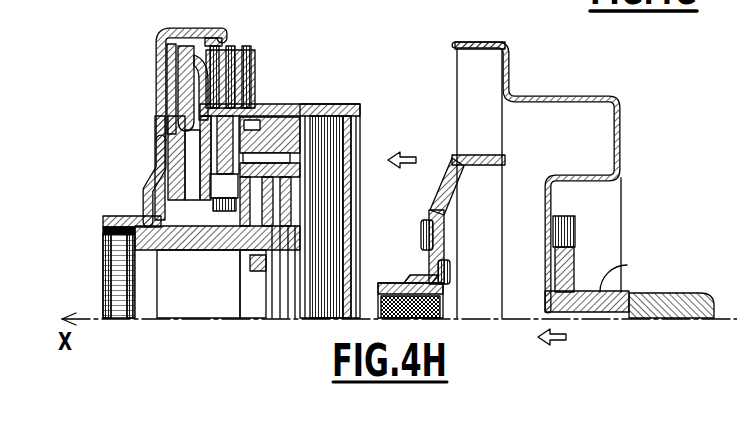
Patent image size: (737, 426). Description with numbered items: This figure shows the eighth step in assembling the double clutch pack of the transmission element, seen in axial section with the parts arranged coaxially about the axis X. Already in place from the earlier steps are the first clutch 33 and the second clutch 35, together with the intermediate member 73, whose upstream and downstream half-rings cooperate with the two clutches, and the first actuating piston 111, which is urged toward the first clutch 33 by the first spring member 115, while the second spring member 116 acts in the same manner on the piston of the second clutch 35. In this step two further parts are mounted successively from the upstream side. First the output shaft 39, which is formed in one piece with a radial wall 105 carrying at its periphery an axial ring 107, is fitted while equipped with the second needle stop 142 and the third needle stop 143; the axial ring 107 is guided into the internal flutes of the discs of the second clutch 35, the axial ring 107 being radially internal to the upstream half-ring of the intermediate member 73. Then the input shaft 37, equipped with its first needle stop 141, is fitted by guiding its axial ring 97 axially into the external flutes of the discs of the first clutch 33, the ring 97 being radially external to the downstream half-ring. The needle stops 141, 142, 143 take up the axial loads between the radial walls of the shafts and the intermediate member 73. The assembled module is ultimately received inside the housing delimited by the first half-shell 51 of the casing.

The first clutch 33 is at (260, 75).
The second clutch 35 is at (332, 103).
The movement input shaft 37 is at (602, 292).
The movement output shaft 39 is at (398, 282).
The first half-shell 51 is at (621, 143).
The intermediate member 73 is at (158, 250).
The axial ring 97 is at (479, 40).
The radial wall 105 is at (442, 240).
The axial ring 107 is at (475, 168).
The first actuating piston 111 is at (181, 102).
The first spring member 115 is at (177, 80).
The second spring member 116 is at (166, 152).
The first needle stop 141 is at (583, 228).
The second needle stop 142 is at (452, 278).
The third needle stop 143 is at (426, 228).